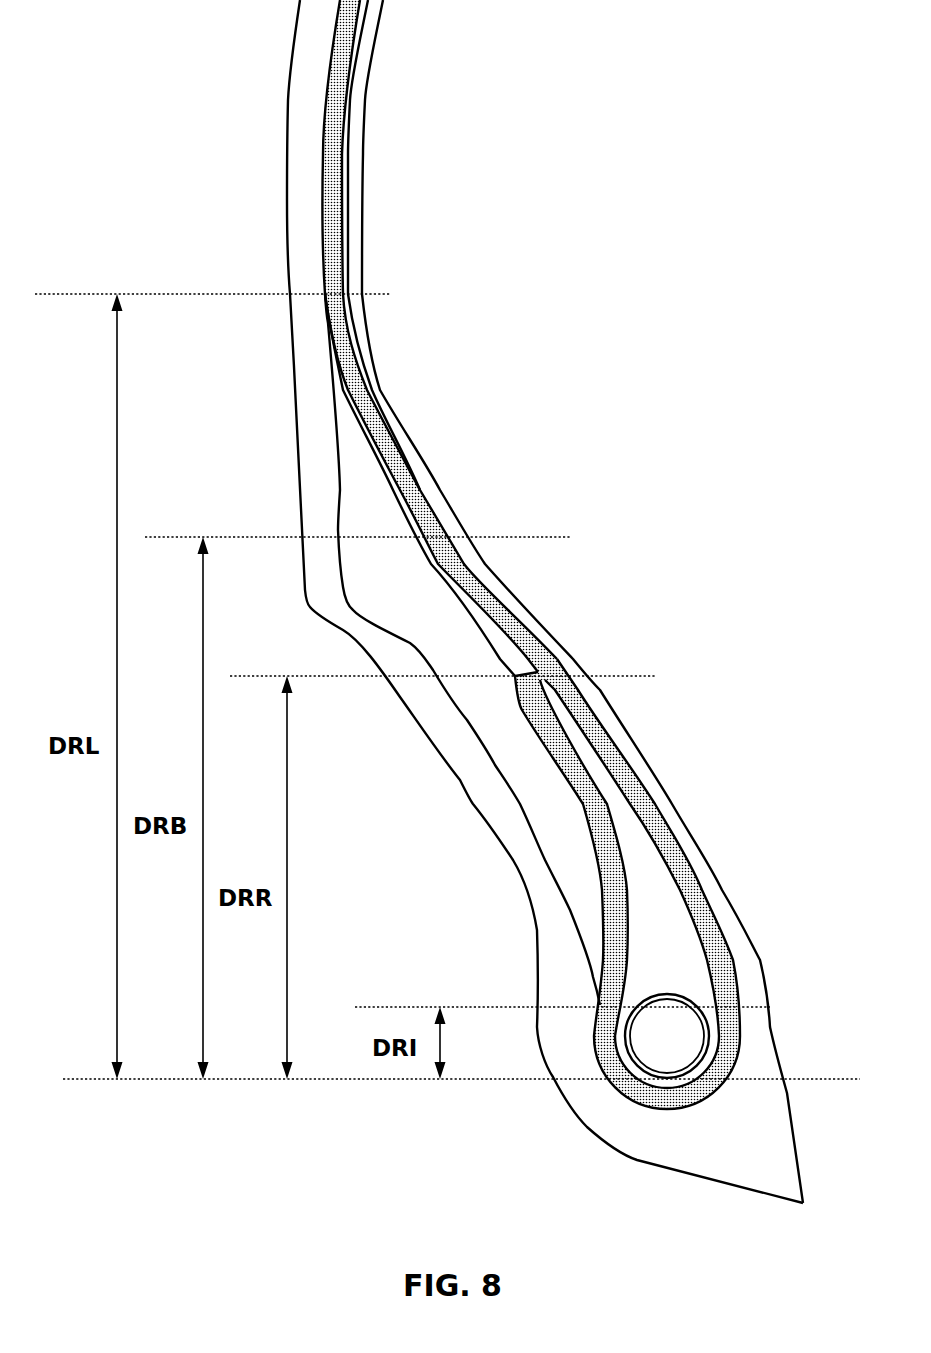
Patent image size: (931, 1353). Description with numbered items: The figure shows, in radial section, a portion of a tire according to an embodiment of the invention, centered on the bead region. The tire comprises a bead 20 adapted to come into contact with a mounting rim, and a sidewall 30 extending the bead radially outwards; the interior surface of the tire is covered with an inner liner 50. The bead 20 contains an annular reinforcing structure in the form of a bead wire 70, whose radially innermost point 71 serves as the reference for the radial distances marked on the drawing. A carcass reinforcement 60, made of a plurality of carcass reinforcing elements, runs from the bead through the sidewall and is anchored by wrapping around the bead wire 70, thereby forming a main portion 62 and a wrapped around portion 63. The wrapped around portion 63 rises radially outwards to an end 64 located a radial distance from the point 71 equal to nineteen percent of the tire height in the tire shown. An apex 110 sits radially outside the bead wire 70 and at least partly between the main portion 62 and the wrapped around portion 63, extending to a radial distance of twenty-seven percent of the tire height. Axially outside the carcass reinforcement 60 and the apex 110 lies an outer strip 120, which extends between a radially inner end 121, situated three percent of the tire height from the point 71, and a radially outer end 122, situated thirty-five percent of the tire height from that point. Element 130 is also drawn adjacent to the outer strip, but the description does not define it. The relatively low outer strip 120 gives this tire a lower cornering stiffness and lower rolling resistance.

The bead 20 is at (557, 1047).
The sidewall 30 is at (298, 122).
The inner liner 50 is at (412, 462).
The carcass reinforcement 60 is at (328, 140).
The main portion 62 is at (648, 812).
The wrapped around portion 63 is at (593, 810).
The end 64 is at (516, 676).
The bead wire 70 is at (670, 1040).
The radially innermost point 71 is at (667, 1081).
The apex 110 is at (689, 984).
The outer strip 120 is at (414, 599).
The radially inner end 121 is at (602, 1008).
The radially outer end 122 is at (325, 293).
The rim cushion rubber 130 is at (465, 778).